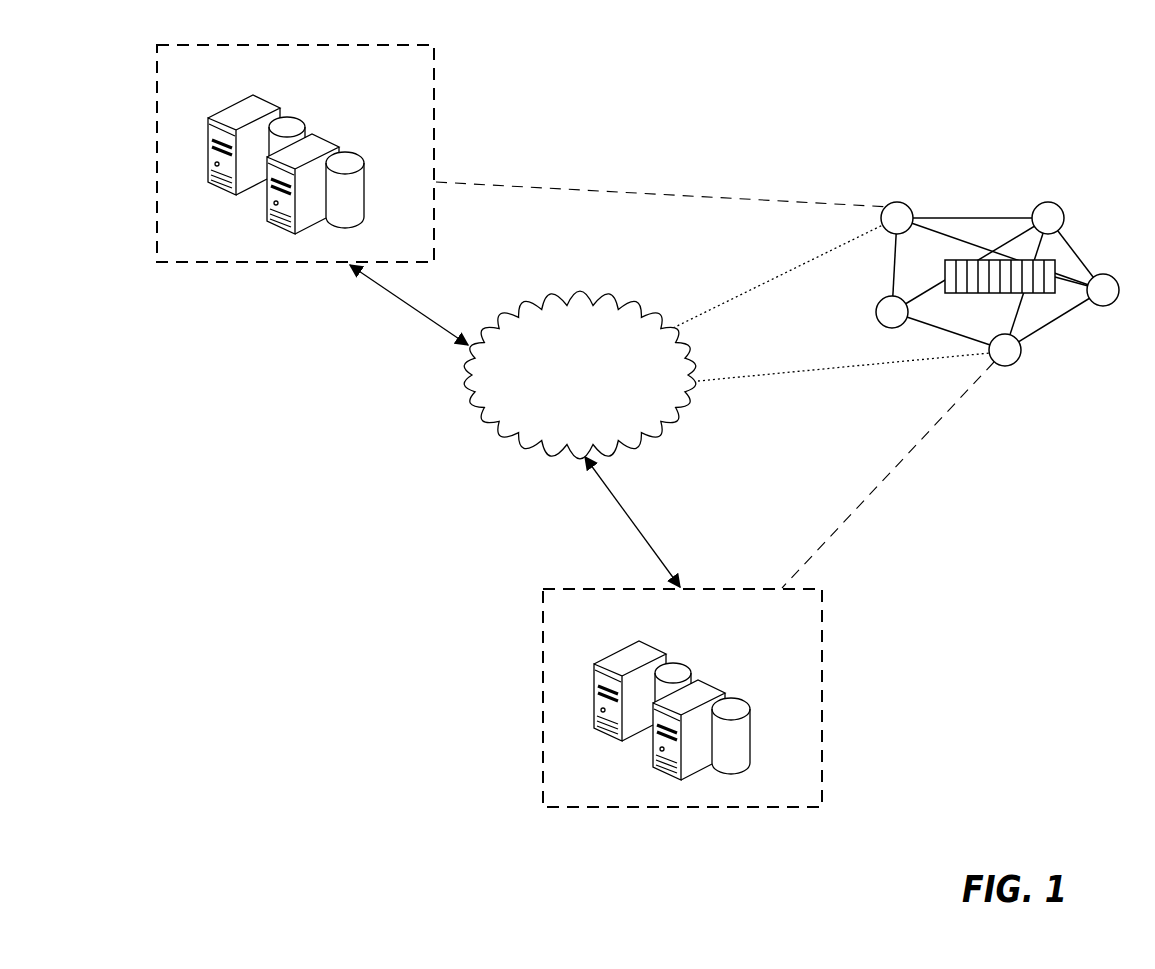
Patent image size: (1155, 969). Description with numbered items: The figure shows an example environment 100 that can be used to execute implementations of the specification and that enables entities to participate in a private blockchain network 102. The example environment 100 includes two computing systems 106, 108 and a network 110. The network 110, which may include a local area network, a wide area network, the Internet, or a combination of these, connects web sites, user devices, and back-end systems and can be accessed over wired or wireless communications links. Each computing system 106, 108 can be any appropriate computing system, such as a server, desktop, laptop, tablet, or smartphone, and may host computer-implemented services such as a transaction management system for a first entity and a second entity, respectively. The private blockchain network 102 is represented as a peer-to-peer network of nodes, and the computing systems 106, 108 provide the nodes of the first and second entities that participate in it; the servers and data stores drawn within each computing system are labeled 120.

The system 100 is at (175, 582).
The distributed ledger network / node cluster 102 is at (1048, 170).
The first computing system 106 is at (437, 152).
The second computing system 108 is at (822, 700).
The network 110 is at (585, 295).
The servers and data stores 120 is at (307, 122).